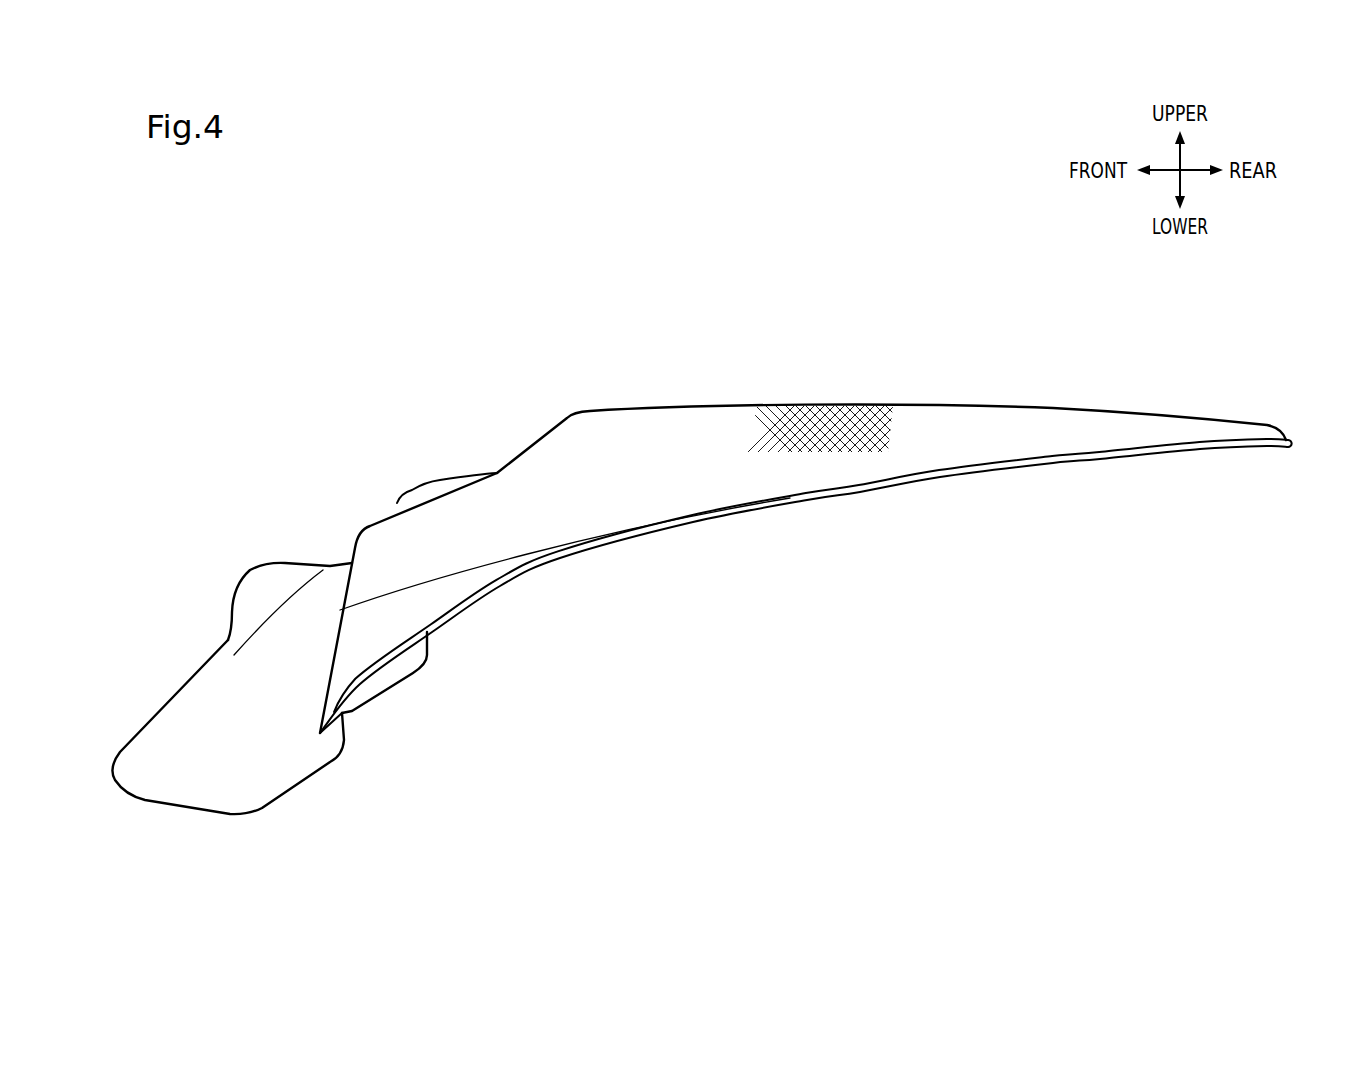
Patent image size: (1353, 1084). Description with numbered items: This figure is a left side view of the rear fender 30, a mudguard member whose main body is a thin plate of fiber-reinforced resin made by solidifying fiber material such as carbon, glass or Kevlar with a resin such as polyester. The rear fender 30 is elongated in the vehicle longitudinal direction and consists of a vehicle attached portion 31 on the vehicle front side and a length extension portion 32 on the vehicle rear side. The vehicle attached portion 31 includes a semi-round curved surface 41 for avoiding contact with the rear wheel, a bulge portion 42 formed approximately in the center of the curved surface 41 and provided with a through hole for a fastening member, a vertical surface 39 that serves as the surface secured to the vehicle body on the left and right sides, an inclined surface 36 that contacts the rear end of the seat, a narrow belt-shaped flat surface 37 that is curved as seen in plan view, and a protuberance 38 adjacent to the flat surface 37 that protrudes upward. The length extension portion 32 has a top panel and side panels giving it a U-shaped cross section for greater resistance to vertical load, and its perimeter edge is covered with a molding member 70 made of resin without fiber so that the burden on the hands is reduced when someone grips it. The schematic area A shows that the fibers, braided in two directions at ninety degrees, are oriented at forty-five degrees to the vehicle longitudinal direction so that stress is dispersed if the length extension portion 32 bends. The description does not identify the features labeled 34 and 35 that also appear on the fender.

The rear fender 30 is at (701, 554).
The vehicle attached portion 31 is at (297, 643).
The length extension portion 32 is at (812, 518).
The flange portion 34 is at (657, 468).
The joining region 35 is at (802, 400).
The inclined surface 36 is at (533, 441).
The flat surface 37 is at (421, 498).
The protuberance 38 is at (450, 483).
The vertical surface 39 is at (303, 771).
The curved surface 41 is at (178, 717).
The bulge portion 42 is at (297, 577).
The molding member 70 is at (795, 503).
The schematic area A is at (855, 420).